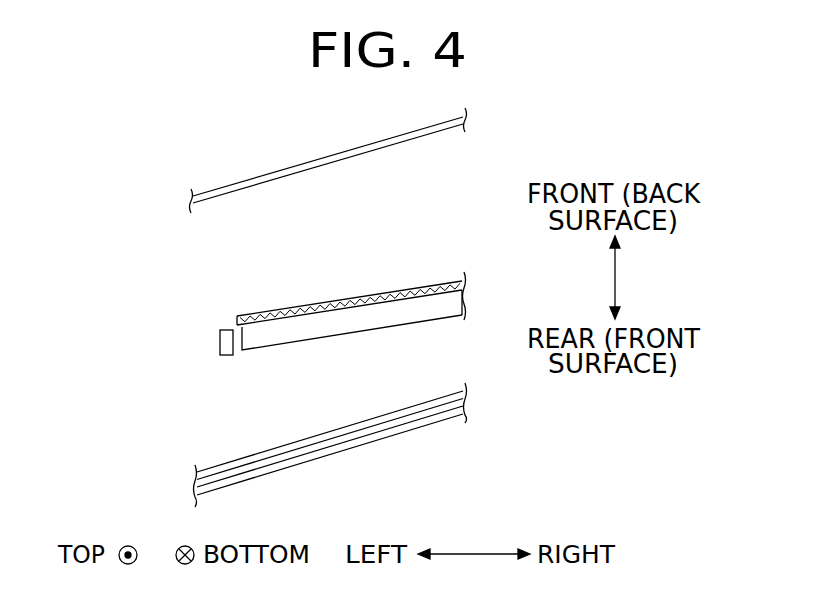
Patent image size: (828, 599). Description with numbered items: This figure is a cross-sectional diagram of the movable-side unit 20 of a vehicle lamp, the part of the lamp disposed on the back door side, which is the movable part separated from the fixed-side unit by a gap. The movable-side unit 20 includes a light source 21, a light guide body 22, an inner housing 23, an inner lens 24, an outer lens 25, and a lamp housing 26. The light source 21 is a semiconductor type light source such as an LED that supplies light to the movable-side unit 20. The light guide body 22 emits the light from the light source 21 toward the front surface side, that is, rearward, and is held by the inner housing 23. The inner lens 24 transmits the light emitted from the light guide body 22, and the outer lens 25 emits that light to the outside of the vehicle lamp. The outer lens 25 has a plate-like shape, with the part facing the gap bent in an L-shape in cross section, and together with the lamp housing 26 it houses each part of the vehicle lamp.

The movable-side unit 20 is at (330, 452).
The light source 21 is at (220, 341).
The light guide body 22 is at (284, 333).
The inner housing 23 is at (370, 300).
The inner lens 24 is at (298, 454).
The outer lens 25 is at (343, 451).
The lamp housing 26 is at (330, 160).